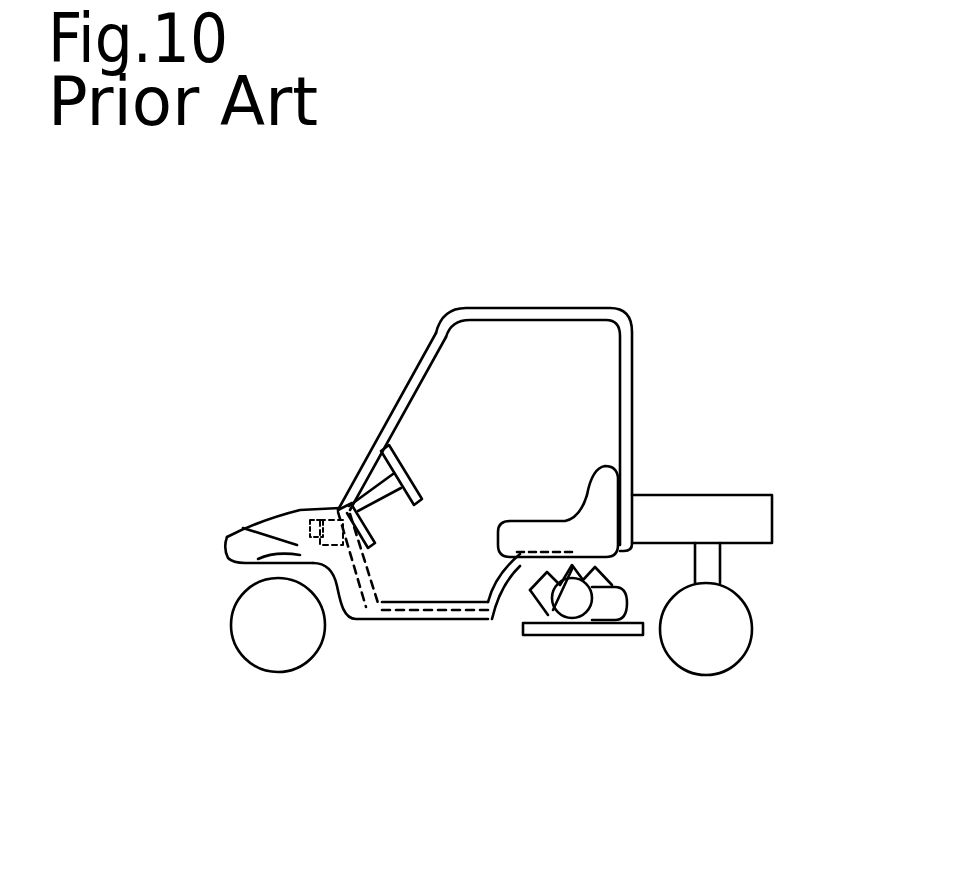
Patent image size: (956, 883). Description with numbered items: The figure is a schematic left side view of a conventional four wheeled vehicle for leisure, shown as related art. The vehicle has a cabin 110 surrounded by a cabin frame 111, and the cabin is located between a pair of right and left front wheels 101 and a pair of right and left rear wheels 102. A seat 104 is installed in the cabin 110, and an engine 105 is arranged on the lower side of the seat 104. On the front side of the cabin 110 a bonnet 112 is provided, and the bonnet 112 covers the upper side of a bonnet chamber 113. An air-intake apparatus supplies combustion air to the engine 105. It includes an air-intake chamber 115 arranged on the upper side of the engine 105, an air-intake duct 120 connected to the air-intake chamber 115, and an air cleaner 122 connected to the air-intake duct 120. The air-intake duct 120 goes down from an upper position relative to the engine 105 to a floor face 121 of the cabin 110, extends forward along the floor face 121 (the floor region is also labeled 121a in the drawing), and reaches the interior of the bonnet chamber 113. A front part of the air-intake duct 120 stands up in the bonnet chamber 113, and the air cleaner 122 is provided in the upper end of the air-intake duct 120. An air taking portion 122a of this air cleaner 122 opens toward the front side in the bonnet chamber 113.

The front wheels 101 is at (268, 655).
The rear wheels 102 is at (728, 650).
The seat 104 is at (543, 533).
The engine 105 is at (578, 608).
The cabin 110 is at (507, 382).
The cabin frame 111 is at (440, 337).
The bonnet 112 is at (277, 522).
The bonnet chamber 113 is at (228, 534).
The air-intake chamber 115 is at (550, 627).
The air-intake duct 120 is at (328, 596).
The floor face 121 is at (403, 622).
The floor surface 121a is at (435, 599).
The air cleaner 122 is at (327, 520).
The air taking portion 122a is at (312, 520).